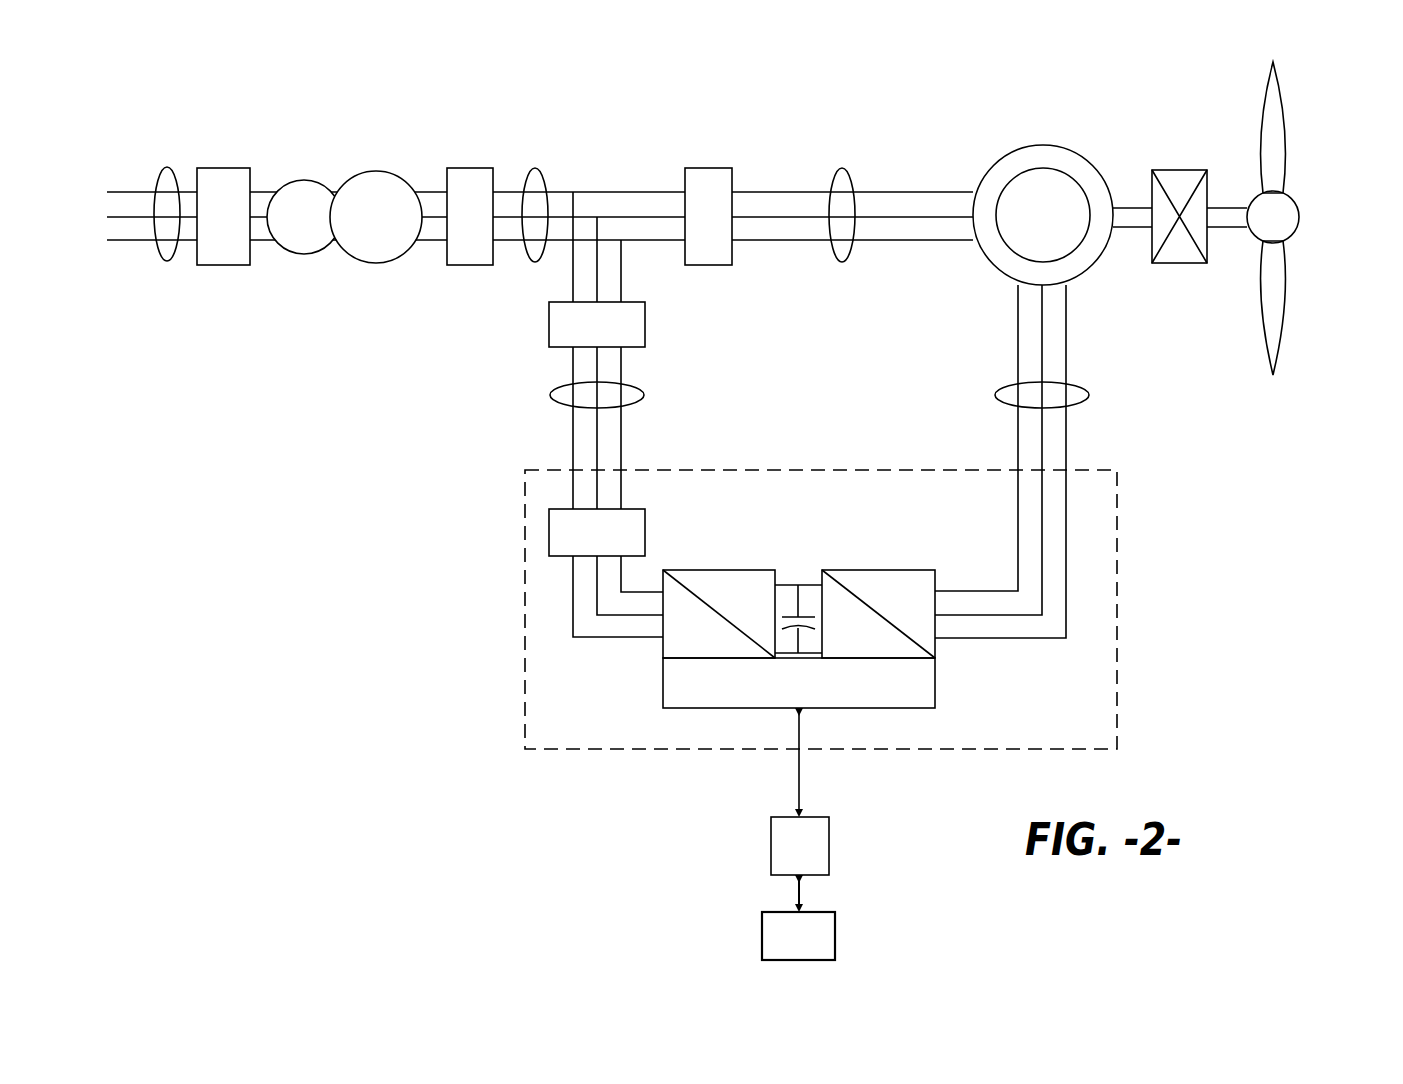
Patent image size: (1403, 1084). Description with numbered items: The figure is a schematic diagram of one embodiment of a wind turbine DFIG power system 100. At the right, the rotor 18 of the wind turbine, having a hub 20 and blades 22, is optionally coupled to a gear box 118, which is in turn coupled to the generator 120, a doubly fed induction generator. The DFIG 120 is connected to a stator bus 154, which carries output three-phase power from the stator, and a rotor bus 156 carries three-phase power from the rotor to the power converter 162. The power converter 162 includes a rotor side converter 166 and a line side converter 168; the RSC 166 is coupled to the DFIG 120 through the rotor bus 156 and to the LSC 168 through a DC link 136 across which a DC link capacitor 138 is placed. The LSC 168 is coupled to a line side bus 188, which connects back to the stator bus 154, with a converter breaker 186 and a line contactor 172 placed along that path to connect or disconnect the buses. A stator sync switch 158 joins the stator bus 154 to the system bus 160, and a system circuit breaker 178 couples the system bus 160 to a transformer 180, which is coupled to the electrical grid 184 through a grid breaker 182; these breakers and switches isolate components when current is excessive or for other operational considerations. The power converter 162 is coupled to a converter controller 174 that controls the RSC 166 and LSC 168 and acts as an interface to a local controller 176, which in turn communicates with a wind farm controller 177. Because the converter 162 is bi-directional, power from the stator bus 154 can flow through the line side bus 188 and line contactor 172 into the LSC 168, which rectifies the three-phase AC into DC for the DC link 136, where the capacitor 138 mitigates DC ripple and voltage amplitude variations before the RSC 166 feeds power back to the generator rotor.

The rotor 18 is at (1361, 80).
The rotor hub 20 is at (1300, 210).
The rotor blades 22 is at (1287, 140).
The wind turbine DFIG power system 100 is at (540, 432).
The gear box 118 is at (1180, 170).
The generator 120 is at (1043, 145).
The DC link 136 is at (807, 583).
The DC link capacitor 138 is at (785, 616).
The stator bus 154 is at (845, 170).
The rotor bus 156 is at (1093, 393).
The stator sync switch 158 is at (708, 168).
The system bus 160 is at (540, 170).
The power converter 162 is at (1117, 573).
The rotor side converter 166 is at (935, 648).
The line side converter 168 is at (663, 648).
The line contactor 172 is at (549, 535).
The converter controller 174 is at (713, 708).
The local controller 176 is at (830, 843).
The wind farm controller 177 is at (837, 938).
The system circuit breaker 178 is at (470, 168).
The transformer 180 is at (375, 171).
The grid breaker 182 is at (220, 168).
The electrical grid 184 is at (167, 168).
The converter breaker 186 is at (549, 329).
The line side bus 188 is at (555, 401).